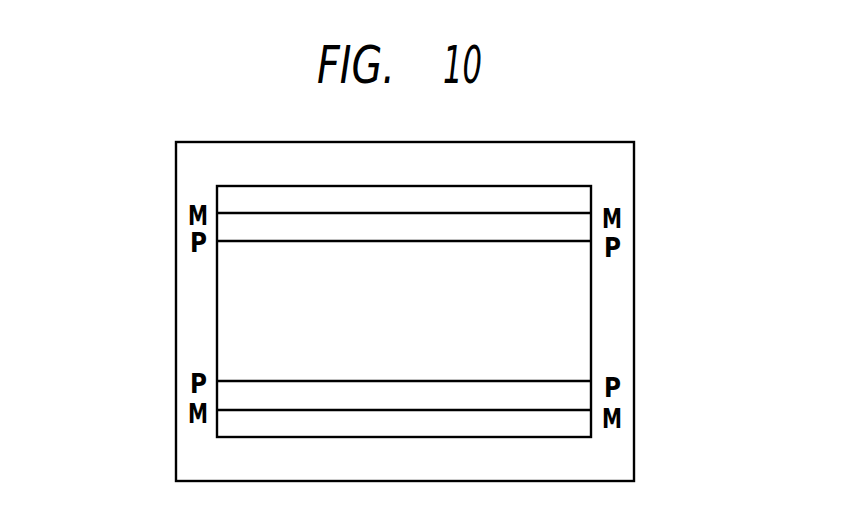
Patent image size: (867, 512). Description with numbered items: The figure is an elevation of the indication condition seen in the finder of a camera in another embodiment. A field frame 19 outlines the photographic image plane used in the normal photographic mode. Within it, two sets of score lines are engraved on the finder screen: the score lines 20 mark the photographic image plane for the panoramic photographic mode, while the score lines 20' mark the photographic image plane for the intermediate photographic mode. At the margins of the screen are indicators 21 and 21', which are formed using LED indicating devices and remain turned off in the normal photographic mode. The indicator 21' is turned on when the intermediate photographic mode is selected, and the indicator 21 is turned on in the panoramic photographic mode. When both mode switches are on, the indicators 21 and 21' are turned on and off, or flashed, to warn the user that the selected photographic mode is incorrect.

The field frame 19 is at (418, 177).
The score lines 20 is at (327, 311).
The score lines 20' is at (419, 311).
The indicator 21 is at (411, 312).
The indicator 21' is at (412, 314).